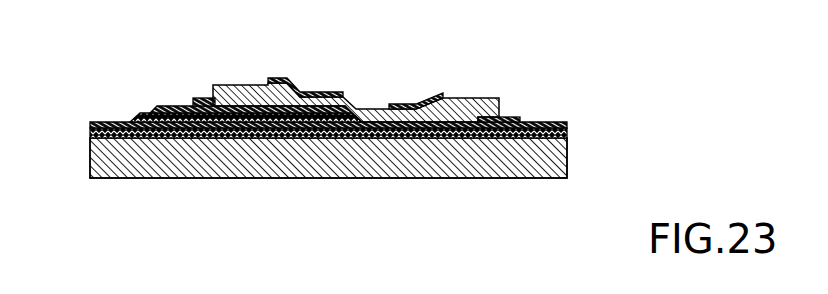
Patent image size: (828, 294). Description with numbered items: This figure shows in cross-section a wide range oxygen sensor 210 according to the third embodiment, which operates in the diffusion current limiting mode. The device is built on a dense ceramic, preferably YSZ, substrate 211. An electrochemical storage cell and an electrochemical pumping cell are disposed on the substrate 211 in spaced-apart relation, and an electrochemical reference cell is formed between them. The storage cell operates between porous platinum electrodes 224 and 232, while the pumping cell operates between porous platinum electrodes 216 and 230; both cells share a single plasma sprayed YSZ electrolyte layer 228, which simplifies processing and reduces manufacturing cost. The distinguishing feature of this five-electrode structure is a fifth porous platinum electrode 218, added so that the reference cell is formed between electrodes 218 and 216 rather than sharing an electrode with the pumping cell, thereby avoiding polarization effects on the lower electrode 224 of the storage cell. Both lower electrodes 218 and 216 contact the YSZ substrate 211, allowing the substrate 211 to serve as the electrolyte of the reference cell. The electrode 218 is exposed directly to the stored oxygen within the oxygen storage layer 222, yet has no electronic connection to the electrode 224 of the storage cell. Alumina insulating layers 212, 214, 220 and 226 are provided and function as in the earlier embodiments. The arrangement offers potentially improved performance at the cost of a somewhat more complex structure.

The wide range oxygen sensor 210 is at (590, 167).
The substrate 211 is at (477, 173).
The alumina insulating layer 212 is at (567, 138).
The alumina insulating layer 214 is at (90, 137).
The porous platinum electrode 216 is at (537, 123).
The fifth porous platinum electrode 218 is at (107, 122).
The alumina insulating layer 220 is at (512, 122).
The oxygen storage layer 222 is at (137, 117).
The porous platinum electrode 224 is at (157, 107).
The alumina insulating layer 226 is at (200, 100).
The plasma sprayed YSZ electrolyte layer 228 is at (466, 100).
The porous platinum electrode 230 is at (414, 100).
The porous platinum electrode 232 is at (318, 90).